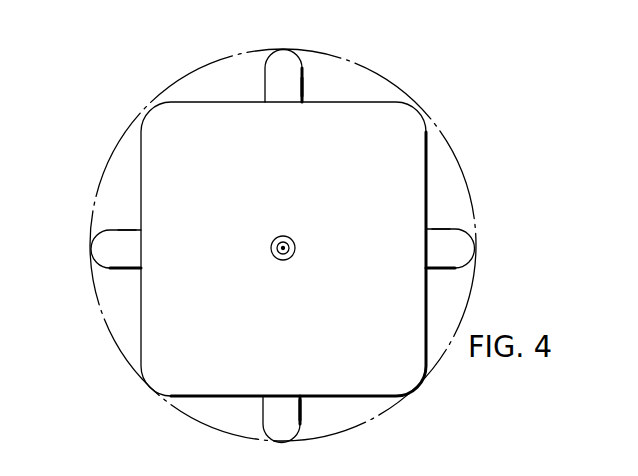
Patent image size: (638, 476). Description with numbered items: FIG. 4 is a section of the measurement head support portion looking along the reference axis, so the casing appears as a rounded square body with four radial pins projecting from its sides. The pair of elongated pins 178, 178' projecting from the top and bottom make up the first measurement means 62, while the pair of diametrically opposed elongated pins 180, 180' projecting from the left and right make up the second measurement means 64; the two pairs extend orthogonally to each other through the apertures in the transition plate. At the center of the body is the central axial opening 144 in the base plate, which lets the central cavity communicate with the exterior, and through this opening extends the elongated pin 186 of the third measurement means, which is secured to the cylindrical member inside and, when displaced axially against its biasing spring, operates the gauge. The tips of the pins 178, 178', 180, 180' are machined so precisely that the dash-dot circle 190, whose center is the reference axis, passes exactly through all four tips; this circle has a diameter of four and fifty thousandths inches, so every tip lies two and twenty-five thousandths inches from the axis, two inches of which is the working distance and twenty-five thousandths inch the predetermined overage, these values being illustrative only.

The first measurement means 62 is at (292, 87).
The second measurement means 64 is at (118, 230).
The central axial opening 144 is at (283, 259).
The elongated pin 178 is at (292, 55).
The elongated pin 178' is at (301, 434).
The elongated pin 180 is at (474, 240).
The elongated pin 180' is at (91, 244).
The elongated pin 186 is at (283, 246).
The circle 190 is at (445, 137).